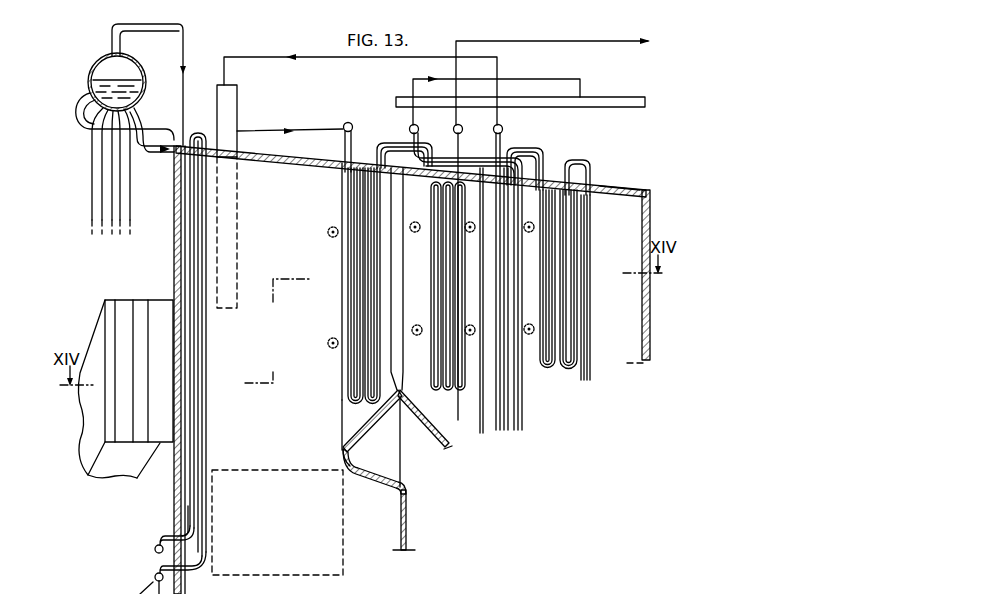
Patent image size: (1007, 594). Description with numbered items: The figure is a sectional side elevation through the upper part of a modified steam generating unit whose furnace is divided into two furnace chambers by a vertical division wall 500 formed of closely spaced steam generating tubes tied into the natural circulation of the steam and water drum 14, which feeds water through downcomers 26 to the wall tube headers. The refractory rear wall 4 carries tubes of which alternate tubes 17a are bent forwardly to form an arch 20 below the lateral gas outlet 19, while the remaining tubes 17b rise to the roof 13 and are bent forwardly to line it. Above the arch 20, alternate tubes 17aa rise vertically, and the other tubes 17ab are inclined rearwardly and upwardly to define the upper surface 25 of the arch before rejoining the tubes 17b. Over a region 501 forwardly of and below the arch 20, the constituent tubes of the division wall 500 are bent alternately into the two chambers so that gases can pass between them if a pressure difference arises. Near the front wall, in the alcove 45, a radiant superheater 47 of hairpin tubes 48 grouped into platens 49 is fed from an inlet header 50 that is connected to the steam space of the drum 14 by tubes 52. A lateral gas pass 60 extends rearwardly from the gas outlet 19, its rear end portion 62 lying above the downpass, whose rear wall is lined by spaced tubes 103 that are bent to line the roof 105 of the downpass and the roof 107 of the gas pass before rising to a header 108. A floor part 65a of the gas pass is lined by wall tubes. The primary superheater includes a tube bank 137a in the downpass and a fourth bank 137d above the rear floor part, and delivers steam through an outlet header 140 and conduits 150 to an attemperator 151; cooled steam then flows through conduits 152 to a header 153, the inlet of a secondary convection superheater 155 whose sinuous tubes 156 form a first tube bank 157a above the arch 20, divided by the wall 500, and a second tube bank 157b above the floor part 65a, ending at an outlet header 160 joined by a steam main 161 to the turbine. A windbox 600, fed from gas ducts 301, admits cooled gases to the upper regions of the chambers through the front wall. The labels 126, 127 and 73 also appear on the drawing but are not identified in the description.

The steam and water drum 14 is at (104, 58).
The downcomers 26 is at (108, 135).
The conduits 150 is at (310, 57).
The steam main 161 is at (554, 41).
The bypass line 127 is at (545, 79).
The attemperator 151 is at (228, 109).
The conduits 152 is at (305, 128).
The header 153 is at (351, 123).
The sinuous tubes 156 is at (352, 145).
The roof 13 is at (281, 163).
The header 108 is at (421, 124).
The outlet header 160 is at (466, 124).
The outlet header 140 is at (503, 130).
The roof 107 is at (467, 173).
The header 126 is at (638, 108).
The roof 105 is at (613, 189).
The fourth tube bank 137d is at (560, 216).
The rear end portion 62 is at (553, 293).
The spaced tubes 103 is at (642, 325).
The gas outlet 73 is at (617, 357).
The tube bank 137a is at (507, 365).
The floor part 65a is at (440, 435).
The second tube bank 157b is at (445, 352).
The lateral gas pass 60 is at (480, 296).
The secondary convection superheater 155 is at (356, 258).
The first tube bank 157a is at (362, 368).
The lateral gas outlet 19 is at (340, 294).
The alternate tubes 17aa is at (341, 413).
The remainder of tubes 17ab is at (358, 428).
The remainder of tubes 17b is at (399, 457).
The arch 20 is at (374, 479).
The alternate tubes 17a is at (395, 489).
The rear wall 4 is at (408, 531).
The upper surface 25 is at (343, 456).
The region 501 is at (292, 556).
The hairpin shaped tubes 48 is at (203, 343).
The tube platens 49 is at (197, 405).
The alcove 45 is at (198, 440).
The radiant superheater 47 is at (203, 455).
The tubes 52 is at (190, 507).
The inlet header 50 is at (155, 549).
The vertical division wall 500 is at (170, 562).
The windbox 600 is at (105, 299).
The gas ducts 301 is at (87, 340).